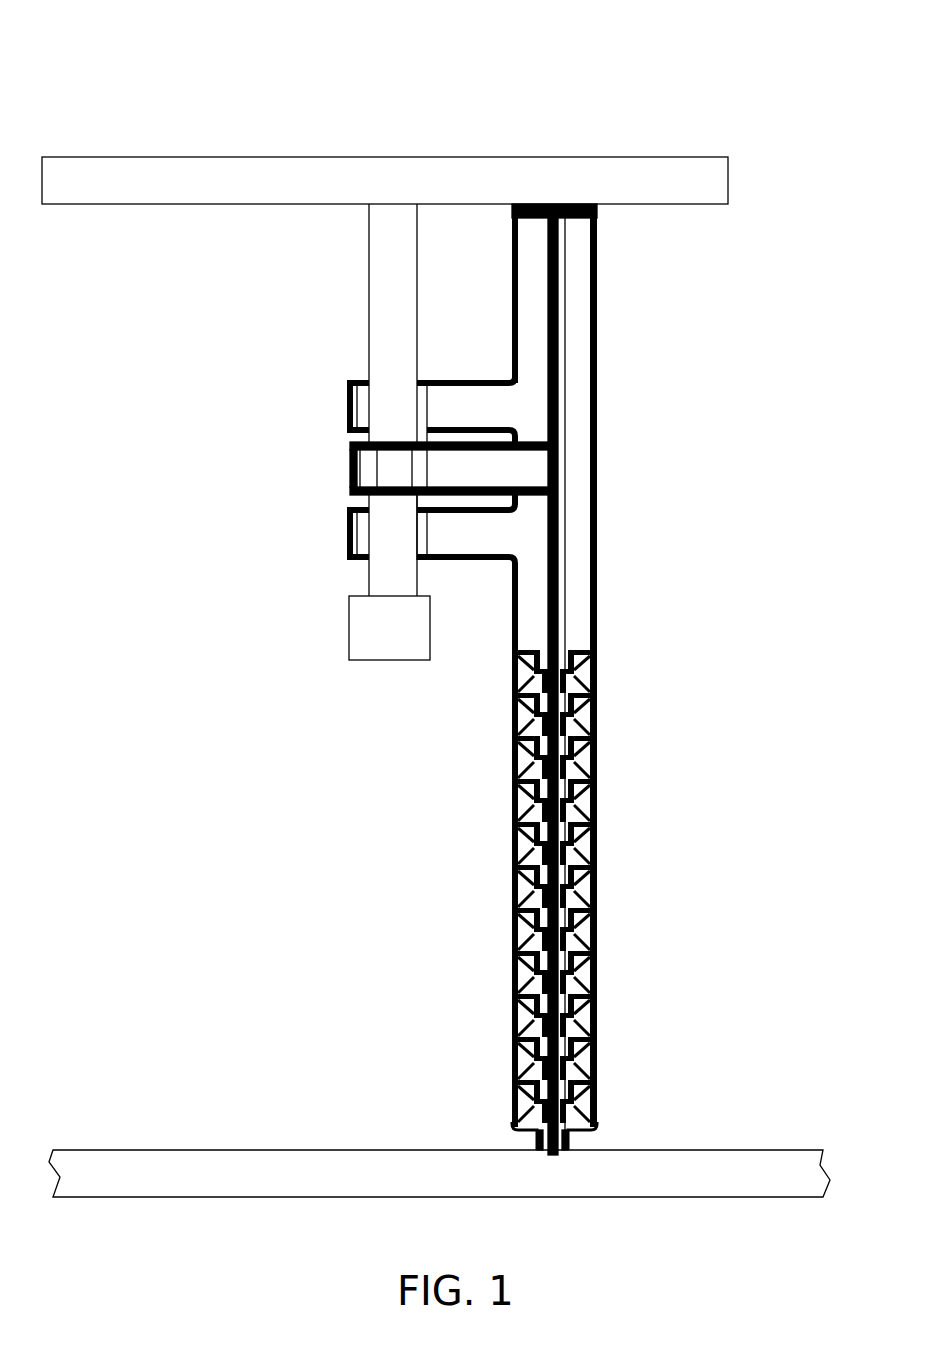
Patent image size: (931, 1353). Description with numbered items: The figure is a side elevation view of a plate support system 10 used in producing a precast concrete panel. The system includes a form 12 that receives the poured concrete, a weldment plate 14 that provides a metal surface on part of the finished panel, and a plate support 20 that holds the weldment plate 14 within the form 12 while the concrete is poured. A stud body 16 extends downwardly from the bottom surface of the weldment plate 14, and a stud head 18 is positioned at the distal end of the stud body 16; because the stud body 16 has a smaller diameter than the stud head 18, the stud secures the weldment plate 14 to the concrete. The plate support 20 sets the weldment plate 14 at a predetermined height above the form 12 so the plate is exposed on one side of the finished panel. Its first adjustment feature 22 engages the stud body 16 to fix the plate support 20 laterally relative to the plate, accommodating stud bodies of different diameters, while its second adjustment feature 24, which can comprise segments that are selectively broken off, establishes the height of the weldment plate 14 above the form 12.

The plate support system 10 is at (688, 97).
The form 12 is at (210, 1168).
The weldment plate 14 is at (158, 185).
The stud body 16 is at (382, 295).
The stud head 18 is at (385, 623).
The plate support 20 is at (656, 464).
The first adjustment feature 22 is at (355, 417).
The second adjustment feature 24 is at (598, 910).